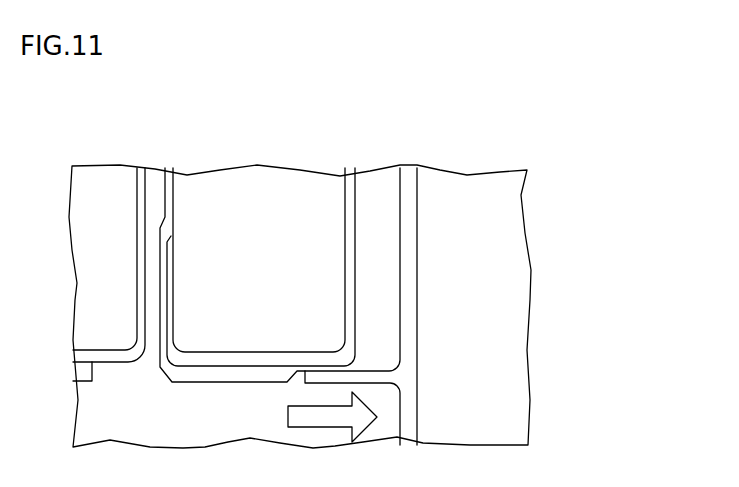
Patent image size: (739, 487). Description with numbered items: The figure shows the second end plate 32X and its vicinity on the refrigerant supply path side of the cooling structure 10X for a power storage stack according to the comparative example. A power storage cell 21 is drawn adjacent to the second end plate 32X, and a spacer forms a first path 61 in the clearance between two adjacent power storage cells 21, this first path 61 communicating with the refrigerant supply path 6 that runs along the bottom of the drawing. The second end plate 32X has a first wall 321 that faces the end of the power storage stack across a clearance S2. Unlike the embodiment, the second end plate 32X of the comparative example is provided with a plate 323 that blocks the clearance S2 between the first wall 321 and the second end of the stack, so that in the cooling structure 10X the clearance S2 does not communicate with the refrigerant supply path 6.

The cooling structure for a power storage stack 10X is at (570, 139).
The first path 61 is at (153, 185).
The power storage cell 21 is at (258, 240).
The plate 323 is at (377, 372).
The second end plate 32X is at (440, 178).
The first wall 321 is at (418, 230).
The clearance S2 is at (383, 307).
The refrigerant supply path 6 is at (205, 438).